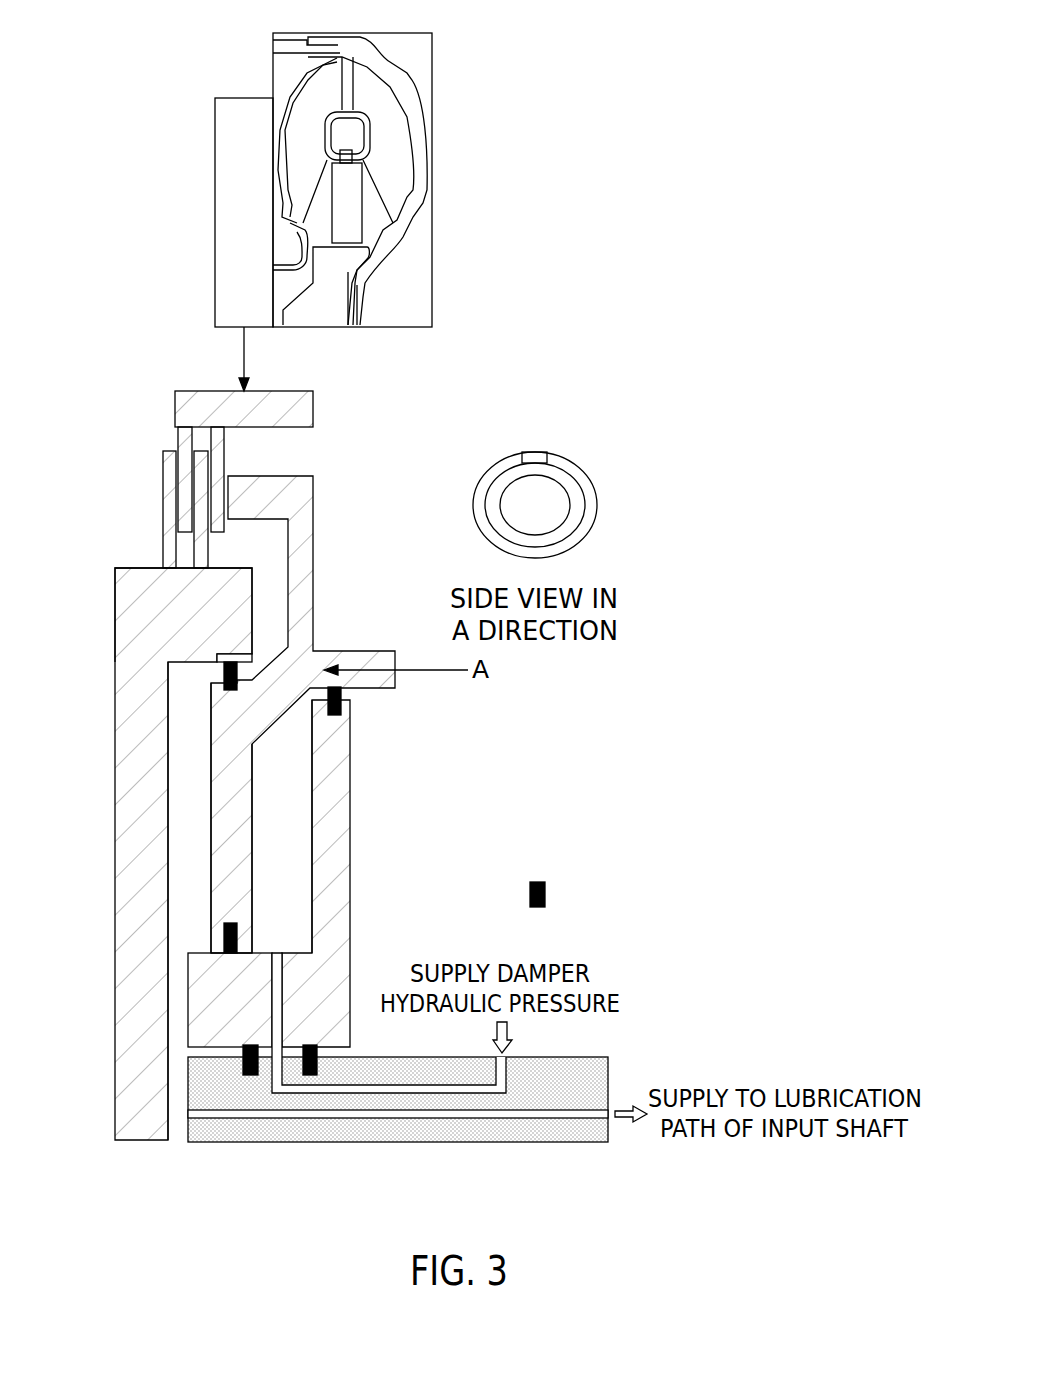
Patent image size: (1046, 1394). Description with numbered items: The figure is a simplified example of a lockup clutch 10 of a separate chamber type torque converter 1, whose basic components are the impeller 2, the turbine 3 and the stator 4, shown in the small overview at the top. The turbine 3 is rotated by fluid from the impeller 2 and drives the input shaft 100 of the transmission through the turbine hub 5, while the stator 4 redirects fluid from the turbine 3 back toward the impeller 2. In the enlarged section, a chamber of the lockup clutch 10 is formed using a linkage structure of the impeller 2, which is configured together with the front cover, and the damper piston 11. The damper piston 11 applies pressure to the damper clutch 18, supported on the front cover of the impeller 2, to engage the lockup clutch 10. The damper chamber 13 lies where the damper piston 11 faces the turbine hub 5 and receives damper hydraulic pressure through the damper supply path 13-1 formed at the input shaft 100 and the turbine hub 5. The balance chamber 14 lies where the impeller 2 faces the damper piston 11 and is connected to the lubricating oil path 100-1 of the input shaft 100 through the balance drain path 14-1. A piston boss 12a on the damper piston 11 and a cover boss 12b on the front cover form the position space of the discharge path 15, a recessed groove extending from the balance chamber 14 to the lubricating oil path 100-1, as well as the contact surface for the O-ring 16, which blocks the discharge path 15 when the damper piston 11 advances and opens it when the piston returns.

The torque converter 1 is at (494, 149).
The impeller 2 is at (303, 44).
The turbine 3 is at (395, 122).
The stator 4 is at (350, 258).
The turbine hub 5 is at (338, 888).
The lockup clutch 10 is at (215, 140).
The damper piston 11 is at (243, 787).
The piston boss 12a is at (230, 698).
The cover boss 12b is at (213, 642).
The damper chamber 13 is at (295, 842).
The damper supply path 13-1 is at (277, 1030).
The balance chamber 14 is at (190, 863).
The balance drain path 14-1 is at (178, 1028).
The discharge path 15 is at (253, 657).
The O-ring 16 is at (240, 690).
The damper clutch 18 is at (185, 492).
The input shaft 100 is at (528, 1130).
The lubricating oil path 100-1 is at (427, 1113).